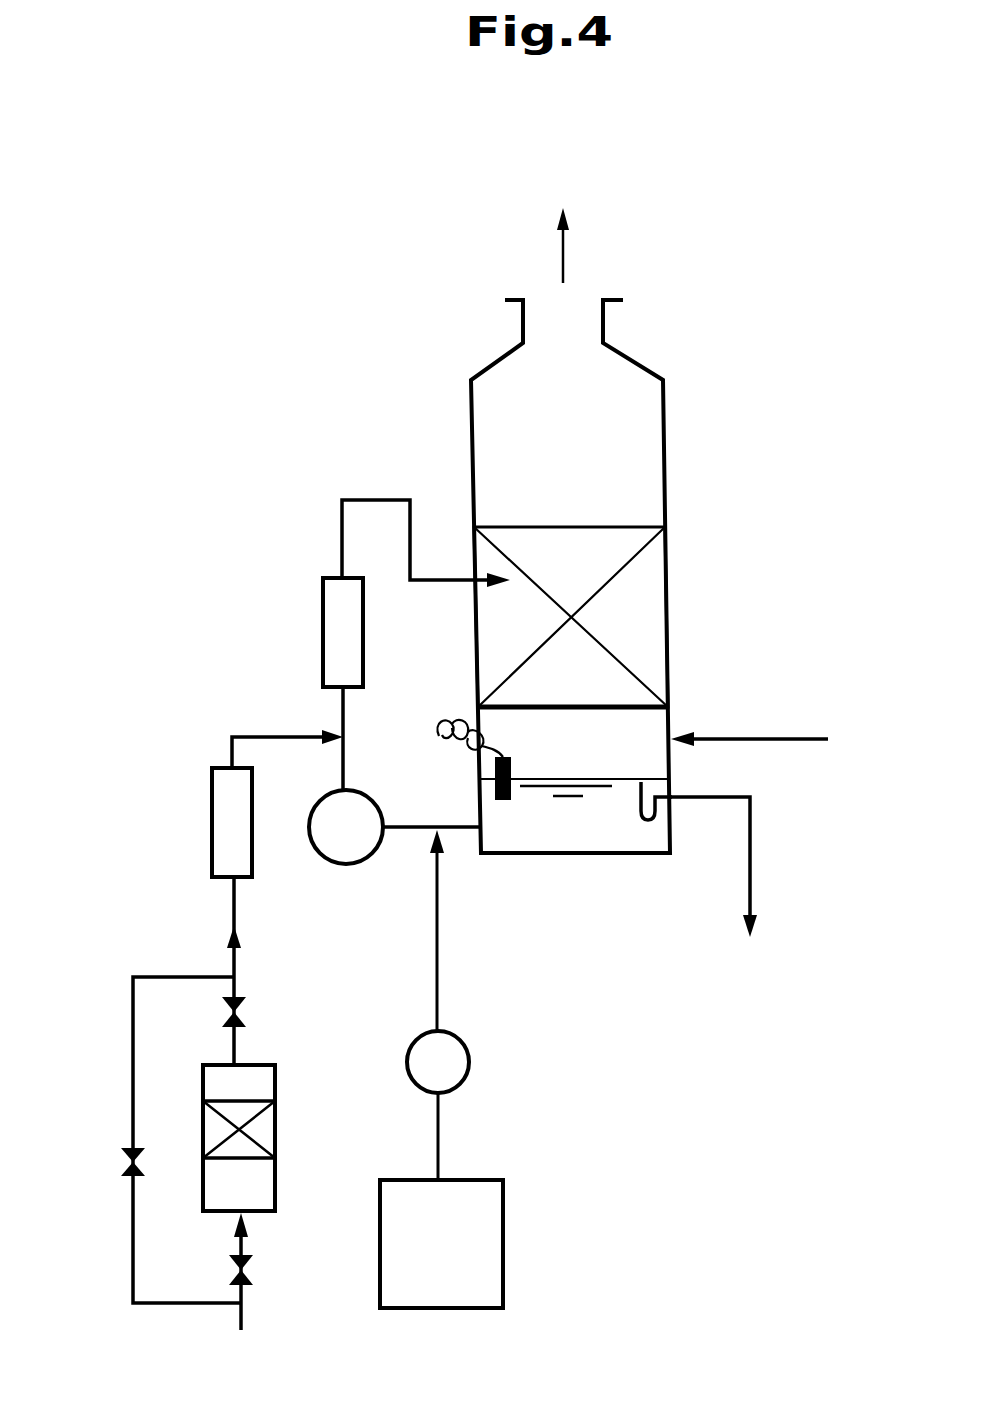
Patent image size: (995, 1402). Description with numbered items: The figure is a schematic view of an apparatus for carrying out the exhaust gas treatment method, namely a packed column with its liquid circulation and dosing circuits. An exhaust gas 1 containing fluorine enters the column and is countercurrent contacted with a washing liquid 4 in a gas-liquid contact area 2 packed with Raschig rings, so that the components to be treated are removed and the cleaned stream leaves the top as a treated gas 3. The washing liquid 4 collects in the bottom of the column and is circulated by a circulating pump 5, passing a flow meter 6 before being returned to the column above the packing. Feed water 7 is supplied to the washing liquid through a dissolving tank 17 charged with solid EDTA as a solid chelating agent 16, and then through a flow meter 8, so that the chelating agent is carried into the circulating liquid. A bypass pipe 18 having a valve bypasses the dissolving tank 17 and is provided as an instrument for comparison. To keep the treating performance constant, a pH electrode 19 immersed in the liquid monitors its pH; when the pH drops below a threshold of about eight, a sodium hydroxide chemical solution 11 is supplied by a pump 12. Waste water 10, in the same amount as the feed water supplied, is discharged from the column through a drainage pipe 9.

The exhaust gas 1 is at (790, 738).
The gas-liquid contact area 2 is at (657, 604).
The treated gas 3 is at (563, 243).
The washing liquid 4 is at (640, 836).
The circulating pump 5 is at (347, 865).
The flow meter 6 is at (364, 657).
The feed water 7 is at (243, 1318).
The flow meter 8 is at (212, 815).
The drainage pipe 9 is at (652, 791).
The waste water 10 is at (751, 867).
The chemical solution 11 is at (504, 1248).
The pump 12 is at (470, 1068).
The solid chelating agent 16 is at (265, 1136).
The dissolving tank 17 is at (276, 1076).
The bypass pipe 18 is at (135, 1208).
The pH electrode 19 is at (505, 757).